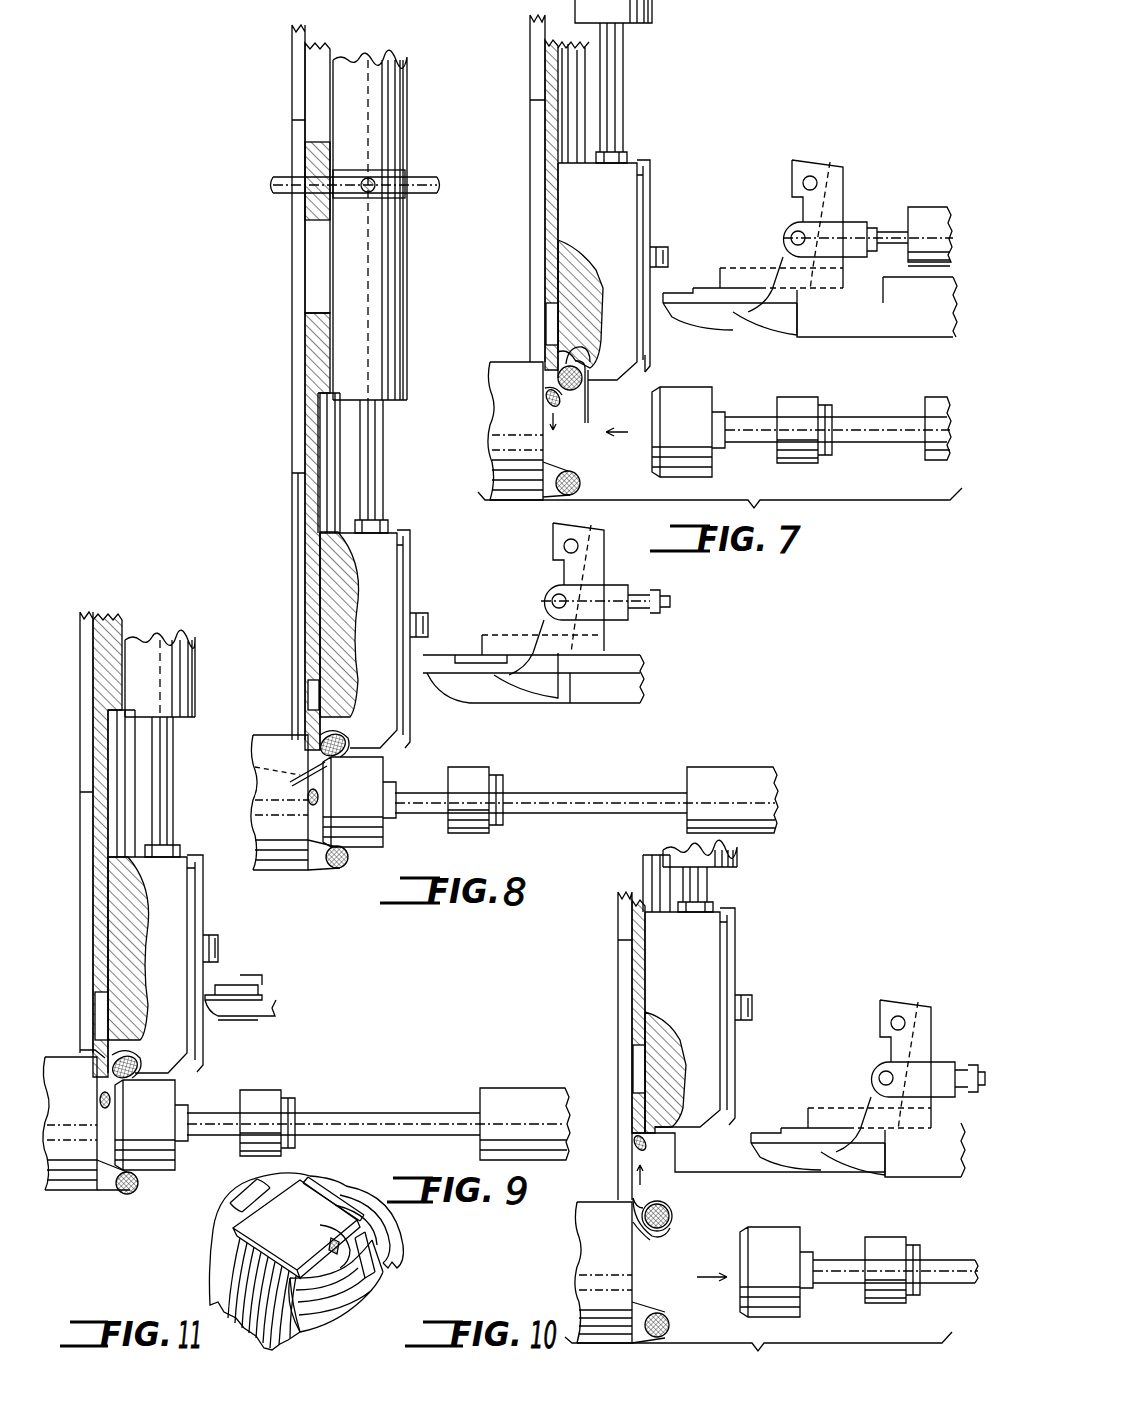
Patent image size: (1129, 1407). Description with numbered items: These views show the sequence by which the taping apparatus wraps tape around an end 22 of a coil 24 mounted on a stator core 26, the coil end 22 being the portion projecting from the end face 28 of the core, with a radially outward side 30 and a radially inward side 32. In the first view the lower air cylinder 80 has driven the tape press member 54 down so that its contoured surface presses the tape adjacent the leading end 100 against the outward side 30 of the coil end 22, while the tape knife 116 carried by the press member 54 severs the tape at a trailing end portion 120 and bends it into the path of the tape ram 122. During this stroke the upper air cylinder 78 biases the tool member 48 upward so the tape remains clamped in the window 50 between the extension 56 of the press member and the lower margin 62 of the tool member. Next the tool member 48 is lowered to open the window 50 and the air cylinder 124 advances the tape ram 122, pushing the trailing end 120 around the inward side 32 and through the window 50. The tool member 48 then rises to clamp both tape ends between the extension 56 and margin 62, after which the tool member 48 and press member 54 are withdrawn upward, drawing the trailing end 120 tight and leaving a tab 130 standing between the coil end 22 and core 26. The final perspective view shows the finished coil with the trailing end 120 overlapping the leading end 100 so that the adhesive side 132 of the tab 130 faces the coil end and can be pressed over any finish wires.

In FIG. 7, the coil end 22 is at (578, 403).
In FIG. 10, the coil end 22 is at (676, 1232).
In FIG. 11, the coil end 22 is at (340, 1322).
In FIG. 11, the coil 24 is at (195, 1241).
In FIG. 10, the stator core 26 is at (554, 1278).
In FIG. 11, the stator core 26 is at (195, 1307).
In FIG. 11, the end face 28 is at (377, 1222).
In FIG. 7, the radially outward side 30 is at (580, 346).
In FIG. 11, the radially outward side 30 is at (380, 1252).
In FIG. 8, the radially inward side 32 is at (338, 757).
In FIG. 7, the tool member 48 is at (546, 232).
In FIG. 8, the tool member 48 is at (310, 600).
In FIG. 9, the tool member 48 is at (103, 920).
In FIG. 10, the tool member 48 is at (637, 1015).
In FIG. 8, the window 50 is at (306, 786).
In FIG. 7, the tape press member 54 is at (621, 182).
In FIG. 8, the tape press member 54 is at (385, 548).
In FIG. 9, the tape press member 54 is at (168, 872).
In FIG. 10, the tape press member 54 is at (706, 930).
In FIG. 9, the extension 56 is at (95, 1052).
In FIG. 7, the lower margin 62 is at (557, 428).
In FIG. 8, the lower margin 62 is at (308, 805).
In FIG. 9, the lower margin 62 is at (108, 1100).
In FIG. 8, the upper air cylinder 78 is at (410, 115).
In FIG. 7, the lower air cylinder 80 is at (652, 10).
In FIG. 8, the lower air cylinder 80 is at (410, 315).
In FIG. 9, the lower air cylinder 80 is at (198, 683).
In FIG. 10, the lower air cylinder 80 is at (700, 876).
In FIG. 8, the leading end 100 is at (308, 752).
In FIG. 10, the leading end 100 is at (657, 1200).
In FIG. 7, the tape knife 116 is at (647, 368).
In FIG. 7, the trailing end portion 120 is at (589, 417).
In FIG. 8, the trailing end portion 120 is at (264, 768).
In FIG. 10, the trailing end portion 120 is at (633, 1215).
In FIG. 7, the tape ram 122 is at (683, 395).
In FIG. 8, the tape ram 122 is at (375, 845).
In FIG. 9, the tape ram 122 is at (170, 1172).
In FIG. 10, the tape ram 122 is at (776, 1233).
In FIG. 9, the air cylinder 124 is at (530, 1090).
In FIG. 10, the tab 130 is at (648, 1196).
In FIG. 11, the tab 130 is at (352, 1235).
In FIG. 11, the adhesive side 132 is at (330, 1240).